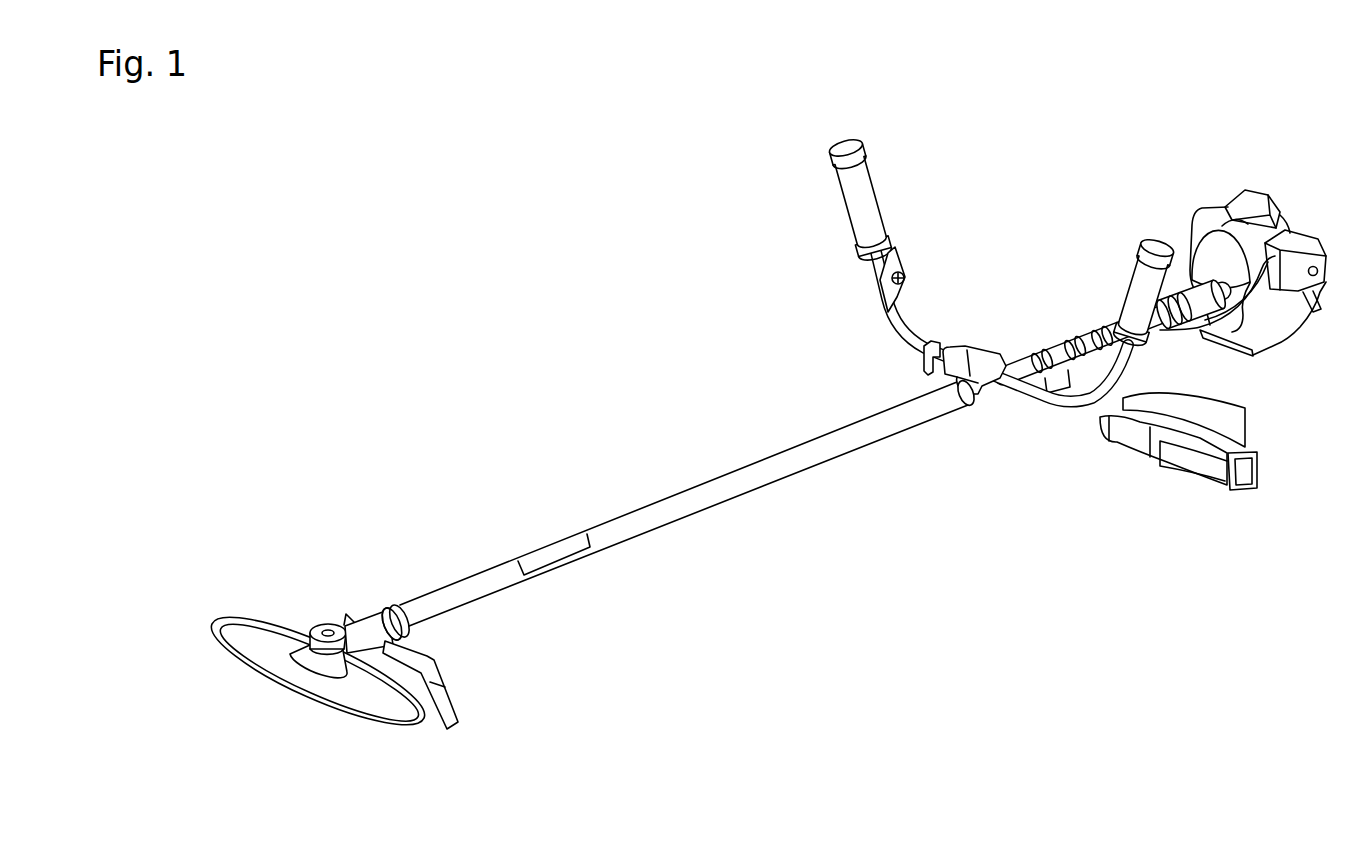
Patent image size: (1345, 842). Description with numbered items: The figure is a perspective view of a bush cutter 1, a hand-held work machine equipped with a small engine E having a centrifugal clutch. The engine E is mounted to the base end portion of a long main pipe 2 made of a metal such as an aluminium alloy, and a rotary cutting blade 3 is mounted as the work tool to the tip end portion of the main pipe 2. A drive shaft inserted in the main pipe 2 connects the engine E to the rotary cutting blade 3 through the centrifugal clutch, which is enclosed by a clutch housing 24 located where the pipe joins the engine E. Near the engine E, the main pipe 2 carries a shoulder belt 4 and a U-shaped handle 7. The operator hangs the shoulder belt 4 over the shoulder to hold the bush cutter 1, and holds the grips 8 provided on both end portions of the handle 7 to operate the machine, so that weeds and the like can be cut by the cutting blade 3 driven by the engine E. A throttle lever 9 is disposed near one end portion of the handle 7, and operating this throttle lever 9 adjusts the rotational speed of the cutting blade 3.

The bush cutter 1 is at (812, 387).
The main pipe 2 is at (793, 468).
The rotary cutting blade 3 is at (352, 712).
The shoulder belt 4 is at (1138, 445).
The U-shaped handle 7 is at (917, 331).
The grips 8 is at (862, 192).
The throttle lever 9 is at (903, 257).
The clutch housing 24 is at (1188, 288).
The engine E is at (1209, 199).